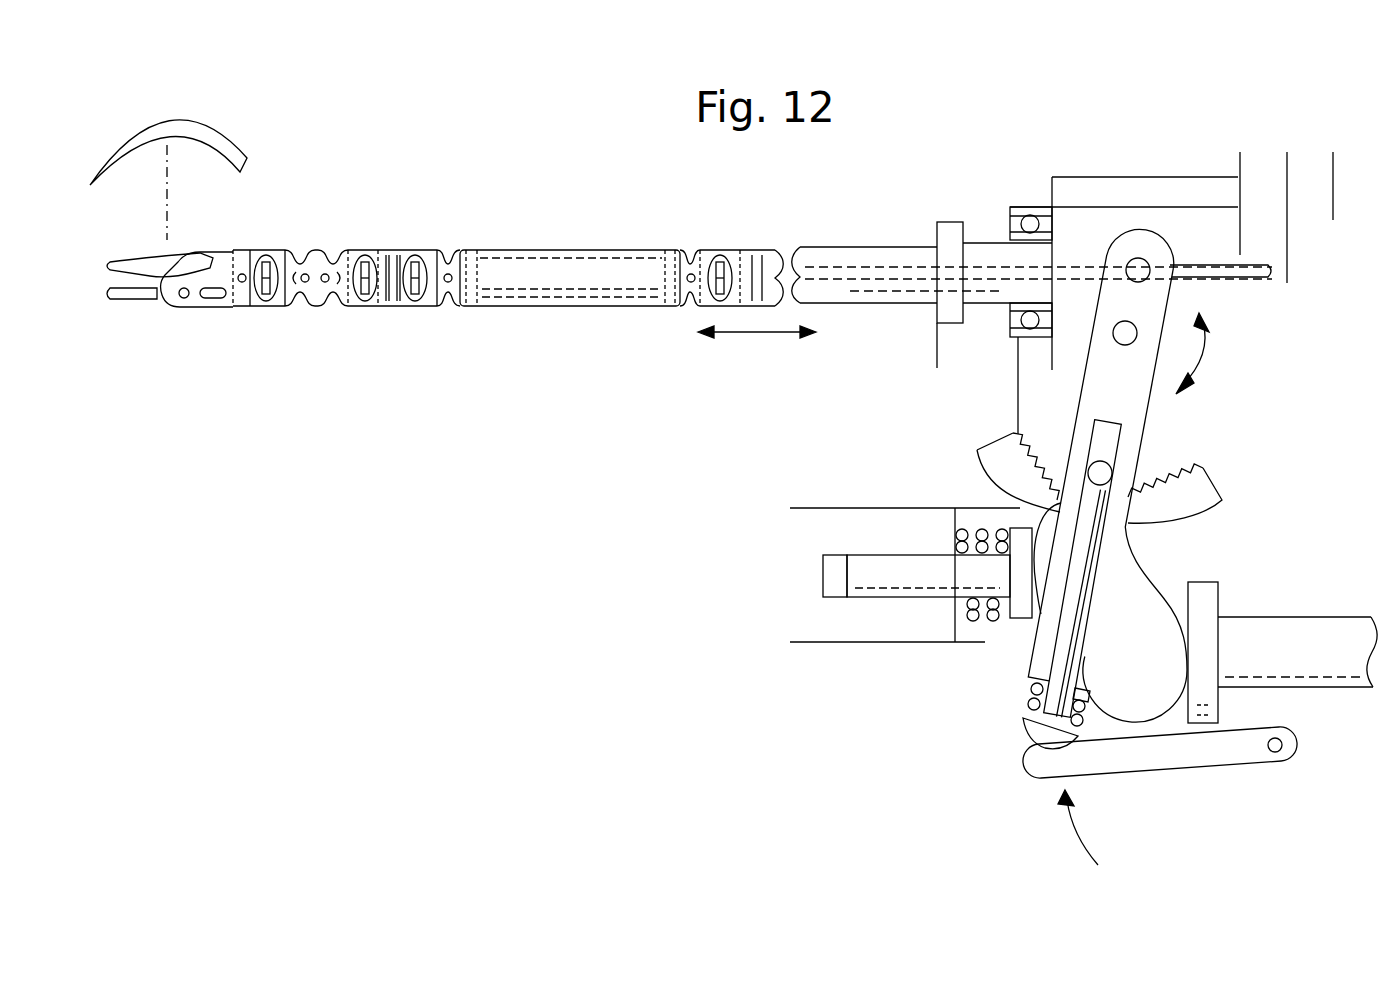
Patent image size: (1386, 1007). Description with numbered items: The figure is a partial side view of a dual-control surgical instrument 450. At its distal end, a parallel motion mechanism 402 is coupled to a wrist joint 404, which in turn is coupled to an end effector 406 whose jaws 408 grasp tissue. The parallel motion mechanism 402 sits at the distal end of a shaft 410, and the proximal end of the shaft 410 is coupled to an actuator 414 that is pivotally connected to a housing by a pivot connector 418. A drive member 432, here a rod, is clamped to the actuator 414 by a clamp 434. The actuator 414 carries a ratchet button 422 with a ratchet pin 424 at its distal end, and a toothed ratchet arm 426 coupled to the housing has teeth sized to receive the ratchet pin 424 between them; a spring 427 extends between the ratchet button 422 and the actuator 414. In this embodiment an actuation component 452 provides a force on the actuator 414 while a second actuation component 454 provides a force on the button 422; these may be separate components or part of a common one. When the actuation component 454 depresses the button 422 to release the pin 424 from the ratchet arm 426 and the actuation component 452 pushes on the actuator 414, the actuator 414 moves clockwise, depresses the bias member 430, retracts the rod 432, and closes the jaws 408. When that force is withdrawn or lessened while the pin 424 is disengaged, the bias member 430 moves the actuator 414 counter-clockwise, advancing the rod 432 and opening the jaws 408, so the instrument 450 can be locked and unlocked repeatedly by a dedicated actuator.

The parallel motion mechanism 402 is at (549, 222).
The wrist joint 404 is at (317, 252).
The end effector 406 is at (210, 308).
The jaws 408 is at (135, 260).
The shaft 410 is at (710, 244).
The actuator 414 is at (1176, 252).
The pivot connector 418 is at (1103, 293).
The ratchet button 422 is at (1022, 724).
The ratchet pin 424 is at (1098, 462).
The ratchet arm 426 is at (1215, 480).
The spring 427 is at (1027, 686).
The bias member 430 is at (910, 562).
The drive member 432 is at (858, 268).
The clamp 434 is at (145, 122).
The dual-control surgical instrument 450 is at (1262, 76).
The actuation component 452 is at (1338, 690).
The actuation component 454 is at (1190, 773).